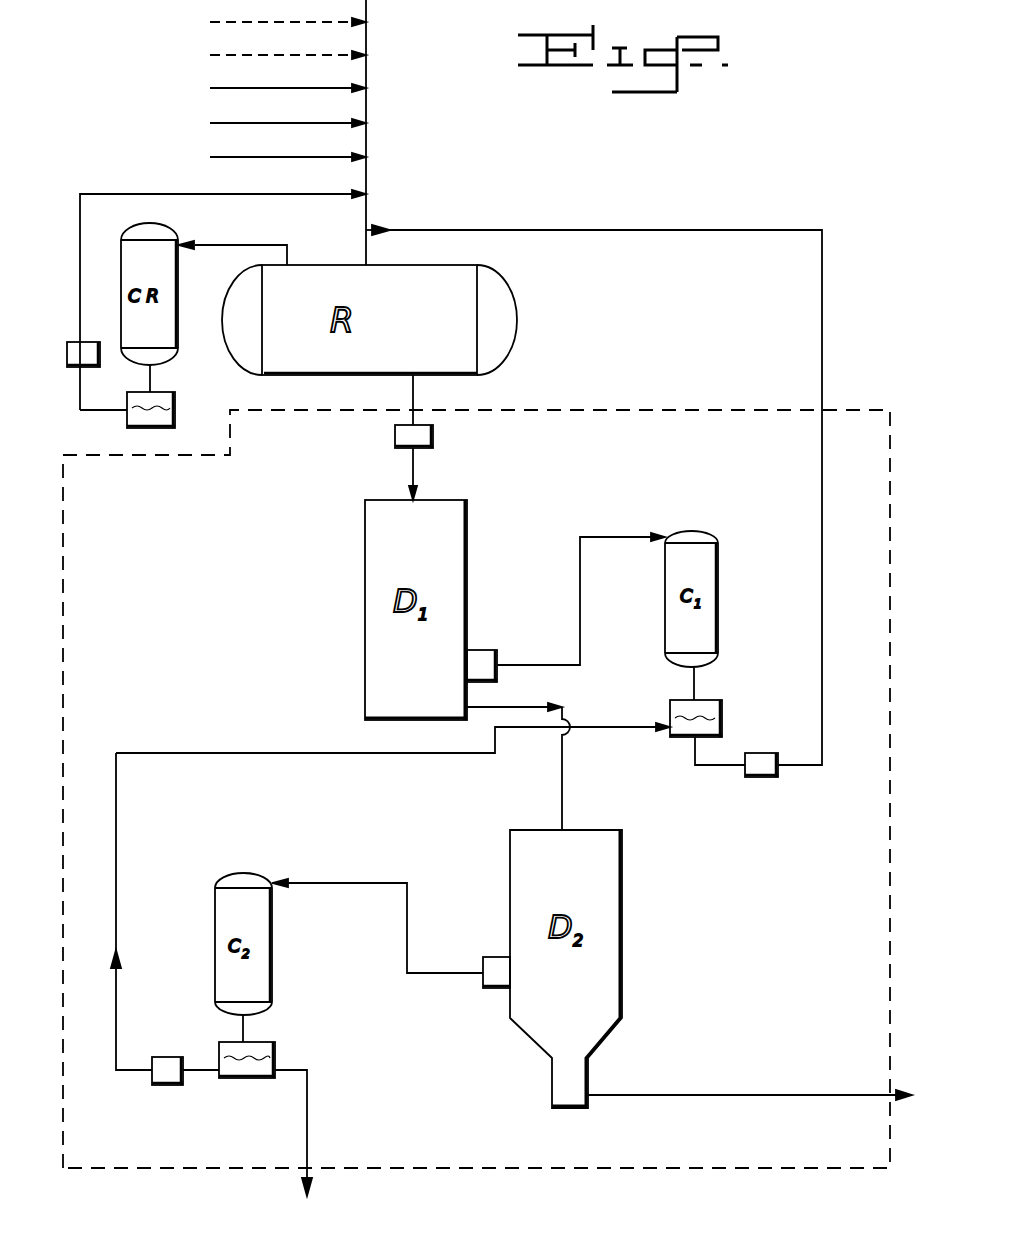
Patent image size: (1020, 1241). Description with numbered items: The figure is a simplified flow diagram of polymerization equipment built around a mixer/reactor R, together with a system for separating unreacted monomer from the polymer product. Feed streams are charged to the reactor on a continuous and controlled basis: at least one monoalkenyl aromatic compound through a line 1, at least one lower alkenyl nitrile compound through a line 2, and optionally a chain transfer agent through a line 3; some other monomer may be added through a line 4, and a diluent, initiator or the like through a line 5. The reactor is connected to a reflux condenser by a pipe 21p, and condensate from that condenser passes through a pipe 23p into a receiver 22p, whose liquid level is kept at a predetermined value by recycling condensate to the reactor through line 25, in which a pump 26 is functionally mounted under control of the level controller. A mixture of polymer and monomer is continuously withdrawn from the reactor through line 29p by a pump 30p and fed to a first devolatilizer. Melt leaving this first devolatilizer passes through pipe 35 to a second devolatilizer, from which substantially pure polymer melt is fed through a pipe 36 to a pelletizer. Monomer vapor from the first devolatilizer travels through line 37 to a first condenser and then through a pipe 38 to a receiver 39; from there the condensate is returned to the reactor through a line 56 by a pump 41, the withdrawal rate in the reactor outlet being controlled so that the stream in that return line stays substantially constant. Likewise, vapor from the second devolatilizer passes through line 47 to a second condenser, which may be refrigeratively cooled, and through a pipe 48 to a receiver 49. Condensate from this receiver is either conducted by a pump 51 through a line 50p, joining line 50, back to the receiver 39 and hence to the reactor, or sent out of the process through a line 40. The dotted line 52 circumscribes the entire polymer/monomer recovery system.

The line 1 is at (275, 89).
The line 2 is at (274, 124).
The line 3 is at (275, 158).
The line 4 is at (274, 23).
The line 5 is at (274, 56).
The line 25 is at (147, 194).
The pipe 21p is at (236, 246).
The receiver 22p is at (176, 408).
The pipe 23p is at (153, 375).
The pump 26 is at (62, 368).
The line 29p is at (413, 397).
The pump 30p is at (433, 440).
The dotted line 52 is at (65, 640).
The line 56 is at (820, 497).
The line 37 is at (632, 537).
The pipe 38 is at (690, 681).
The receiver 39 is at (680, 737).
The pump 41 is at (778, 777).
The line 50 is at (650, 729).
The pipe 35 is at (562, 794).
The pipe 36 is at (735, 1095).
The line 47 is at (345, 885).
The pipe 48 is at (243, 1026).
The receiver 49 is at (250, 1080).
The pump 51 is at (165, 1086).
The line 50p is at (114, 1060).
The line 40 is at (307, 1125).